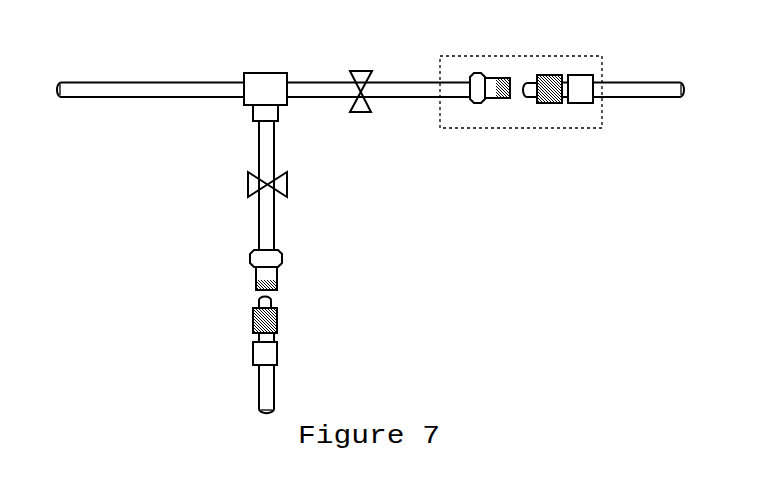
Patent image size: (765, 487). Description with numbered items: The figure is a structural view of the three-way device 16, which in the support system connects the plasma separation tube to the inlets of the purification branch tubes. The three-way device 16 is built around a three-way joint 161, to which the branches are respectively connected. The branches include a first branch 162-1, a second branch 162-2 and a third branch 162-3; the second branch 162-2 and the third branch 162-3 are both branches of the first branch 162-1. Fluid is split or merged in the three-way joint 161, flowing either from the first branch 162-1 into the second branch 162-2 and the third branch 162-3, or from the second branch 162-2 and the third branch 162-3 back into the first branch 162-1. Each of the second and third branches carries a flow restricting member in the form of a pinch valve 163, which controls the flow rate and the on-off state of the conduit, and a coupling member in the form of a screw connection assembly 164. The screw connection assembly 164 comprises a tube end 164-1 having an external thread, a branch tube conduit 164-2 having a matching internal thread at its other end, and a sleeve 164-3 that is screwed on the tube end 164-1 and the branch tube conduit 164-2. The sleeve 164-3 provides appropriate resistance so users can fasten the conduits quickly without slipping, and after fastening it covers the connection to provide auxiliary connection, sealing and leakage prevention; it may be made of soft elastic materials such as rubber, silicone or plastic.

The three-way device 16 is at (469, 270).
The three-way joint 161 is at (265, 91).
The first branch 162-1 is at (190, 89).
The second branch 162-2 is at (415, 90).
The third branch 162-3 is at (270, 237).
The pinch valve 163 is at (350, 111).
The screw connection assembly 164 is at (500, 118).
The tube end 164-1 is at (268, 270).
The branch tube conduit 164-2 is at (265, 320).
The sleeve 164-3 is at (270, 353).